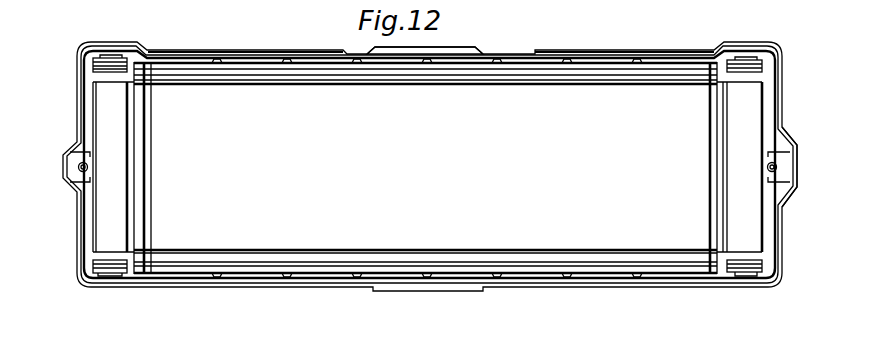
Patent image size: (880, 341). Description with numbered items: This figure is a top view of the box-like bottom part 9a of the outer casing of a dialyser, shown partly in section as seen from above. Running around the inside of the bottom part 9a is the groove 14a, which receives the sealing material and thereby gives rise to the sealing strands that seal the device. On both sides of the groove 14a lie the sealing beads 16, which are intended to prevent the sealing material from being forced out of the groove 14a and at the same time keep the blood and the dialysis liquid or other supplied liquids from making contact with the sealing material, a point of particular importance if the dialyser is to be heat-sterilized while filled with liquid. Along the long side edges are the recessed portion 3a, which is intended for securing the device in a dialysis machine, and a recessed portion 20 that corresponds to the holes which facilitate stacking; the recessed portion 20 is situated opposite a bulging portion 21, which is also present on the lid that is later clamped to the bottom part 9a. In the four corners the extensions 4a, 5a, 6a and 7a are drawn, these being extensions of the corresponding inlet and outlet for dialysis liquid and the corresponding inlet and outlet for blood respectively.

The recessed portion 3a is at (455, 50).
The extension of the dialysate inlet 4a is at (746, 58).
The extension of the dialysate outlet 5a is at (108, 57).
The extension of the blood inlet 6a is at (113, 275).
The extension of the blood outlet 7a is at (747, 274).
The bottom part 9a is at (540, 43).
The groove 14a is at (145, 128).
The sealing beads 16 is at (241, 67).
The recessed portion 20 is at (75, 150).
The bulging portion 21 is at (792, 128).